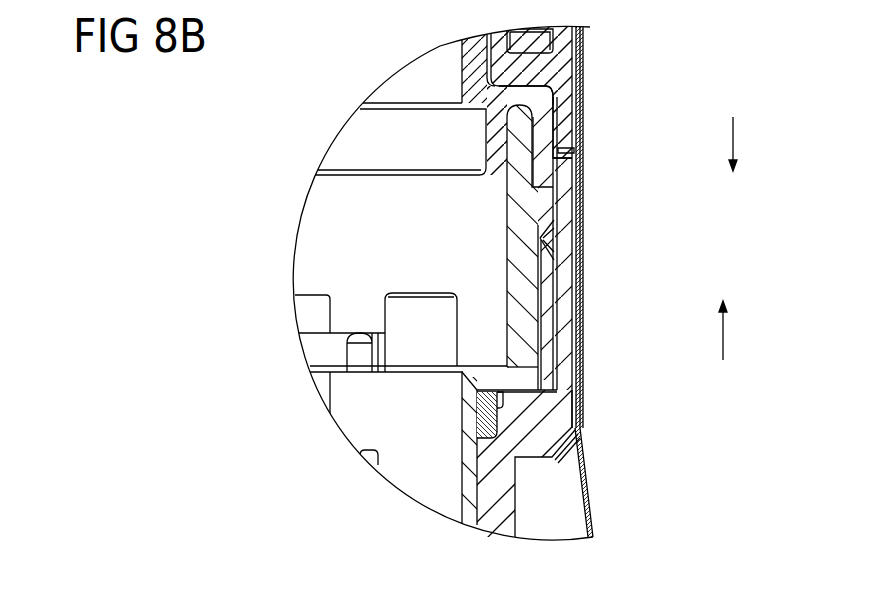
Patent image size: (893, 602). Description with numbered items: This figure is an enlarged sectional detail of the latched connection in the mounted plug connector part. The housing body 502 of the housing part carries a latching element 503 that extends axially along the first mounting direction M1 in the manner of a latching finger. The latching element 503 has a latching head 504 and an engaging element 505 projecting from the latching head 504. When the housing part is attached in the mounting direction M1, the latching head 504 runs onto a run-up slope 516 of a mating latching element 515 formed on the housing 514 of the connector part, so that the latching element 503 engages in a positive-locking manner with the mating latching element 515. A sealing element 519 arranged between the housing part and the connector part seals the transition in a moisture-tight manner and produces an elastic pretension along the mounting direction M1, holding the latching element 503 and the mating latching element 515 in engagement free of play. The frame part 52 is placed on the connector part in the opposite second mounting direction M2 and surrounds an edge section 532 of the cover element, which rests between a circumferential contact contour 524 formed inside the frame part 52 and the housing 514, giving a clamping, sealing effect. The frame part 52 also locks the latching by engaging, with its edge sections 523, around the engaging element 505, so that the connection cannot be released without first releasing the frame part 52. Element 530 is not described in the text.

The frame part 52 is at (563, 62).
The flange 530 is at (478, 72).
The contact contour 524 is at (487, 97).
The edge section 532 is at (527, 98).
The housing body 502 is at (518, 137).
The engaging element 505 is at (545, 138).
The edge section 523 is at (563, 148).
The latching head 504 is at (560, 173).
The mating latching element 515 is at (542, 207).
The run-up slope 516 is at (540, 242).
The latching element 503 is at (548, 306).
The housing 514 is at (517, 352).
The sealing element 519 is at (578, 422).
The first mounting direction M1 is at (743, 330).
The second mounting direction M2 is at (750, 144).